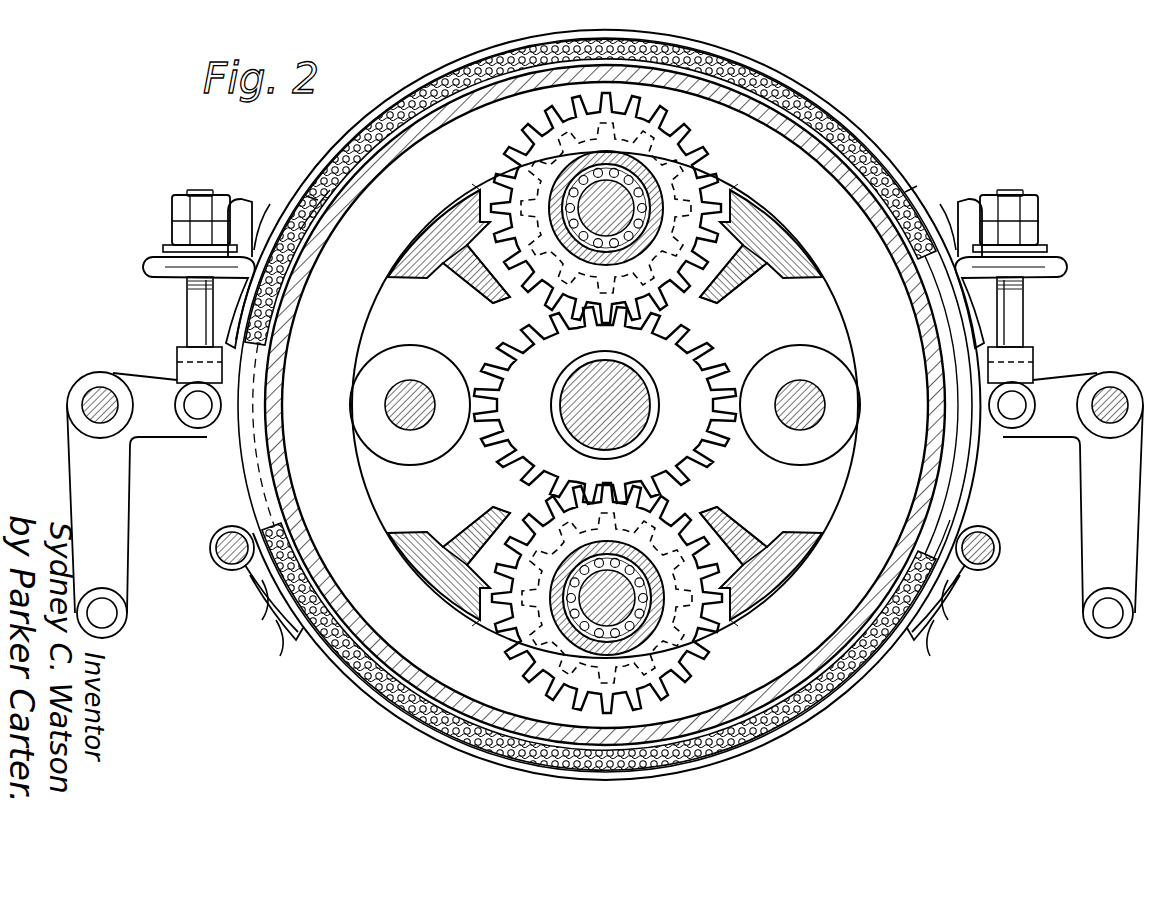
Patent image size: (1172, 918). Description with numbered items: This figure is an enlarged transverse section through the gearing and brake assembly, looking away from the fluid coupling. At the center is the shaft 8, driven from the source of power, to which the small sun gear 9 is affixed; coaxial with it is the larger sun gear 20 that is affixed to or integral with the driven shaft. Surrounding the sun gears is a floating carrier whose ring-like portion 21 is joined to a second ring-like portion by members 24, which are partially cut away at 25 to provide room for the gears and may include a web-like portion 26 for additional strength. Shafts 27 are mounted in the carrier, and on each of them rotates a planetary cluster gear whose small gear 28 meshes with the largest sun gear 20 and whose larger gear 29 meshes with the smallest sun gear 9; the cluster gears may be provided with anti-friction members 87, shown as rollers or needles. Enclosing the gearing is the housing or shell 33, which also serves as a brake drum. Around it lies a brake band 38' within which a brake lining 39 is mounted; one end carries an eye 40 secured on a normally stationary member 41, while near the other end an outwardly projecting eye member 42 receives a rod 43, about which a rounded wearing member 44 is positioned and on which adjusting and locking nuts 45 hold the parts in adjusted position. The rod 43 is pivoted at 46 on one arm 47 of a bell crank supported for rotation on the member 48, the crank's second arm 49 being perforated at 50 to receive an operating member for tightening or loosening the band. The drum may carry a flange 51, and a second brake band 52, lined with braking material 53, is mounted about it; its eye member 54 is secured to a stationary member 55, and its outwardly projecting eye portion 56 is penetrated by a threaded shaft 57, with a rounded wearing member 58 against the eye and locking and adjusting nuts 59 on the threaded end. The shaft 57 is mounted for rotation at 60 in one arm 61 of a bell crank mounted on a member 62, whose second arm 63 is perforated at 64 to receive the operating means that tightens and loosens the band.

The shaft 8 is at (640, 410).
The small sun gear 9 is at (658, 372).
The sun gear 20 is at (718, 348).
The ring-like portion 21 is at (846, 338).
The members 24 is at (438, 232).
The cut-away portion 25 is at (480, 190).
The web-like portion 26 is at (470, 285).
The shafts 27 is at (592, 188).
The small gear 28 is at (590, 152).
The larger gear 29 is at (700, 162).
The housing or shell 33 is at (862, 178).
The brake band 38' is at (632, 148).
The brake lining 39 is at (700, 62).
The eye 40 is at (992, 538).
The member 41 is at (995, 552).
The outwardly projecting eye member 42 is at (1065, 270).
The rod 43 is at (1022, 320).
The rounded wearing member 44 is at (1047, 250).
The adjusting and locking nuts 45 is at (1015, 192).
The pivot 46 is at (1020, 403).
The arm 47 is at (1078, 382).
The member 48 is at (1118, 398).
The second arm 49 is at (1092, 492).
The perforation 50 is at (1106, 620).
The flange 51 is at (252, 464).
The brake band 52 is at (305, 190).
The braking material 53 is at (290, 196).
The eye member 54 is at (258, 582).
The member 55 is at (218, 556).
The outwardly projecting eye portion 56 is at (152, 268).
The threaded shaft 57 is at (187, 312).
The rounded wearing member 58 is at (167, 250).
The locking and adjusting nuts 59 is at (198, 190).
The rotatable mounting 60 is at (200, 412).
The arm 61 is at (145, 378).
The member 62 is at (88, 398).
The second arm 63 is at (75, 462).
The perforation 64 is at (108, 618).
The anti-friction members 87 is at (650, 210).